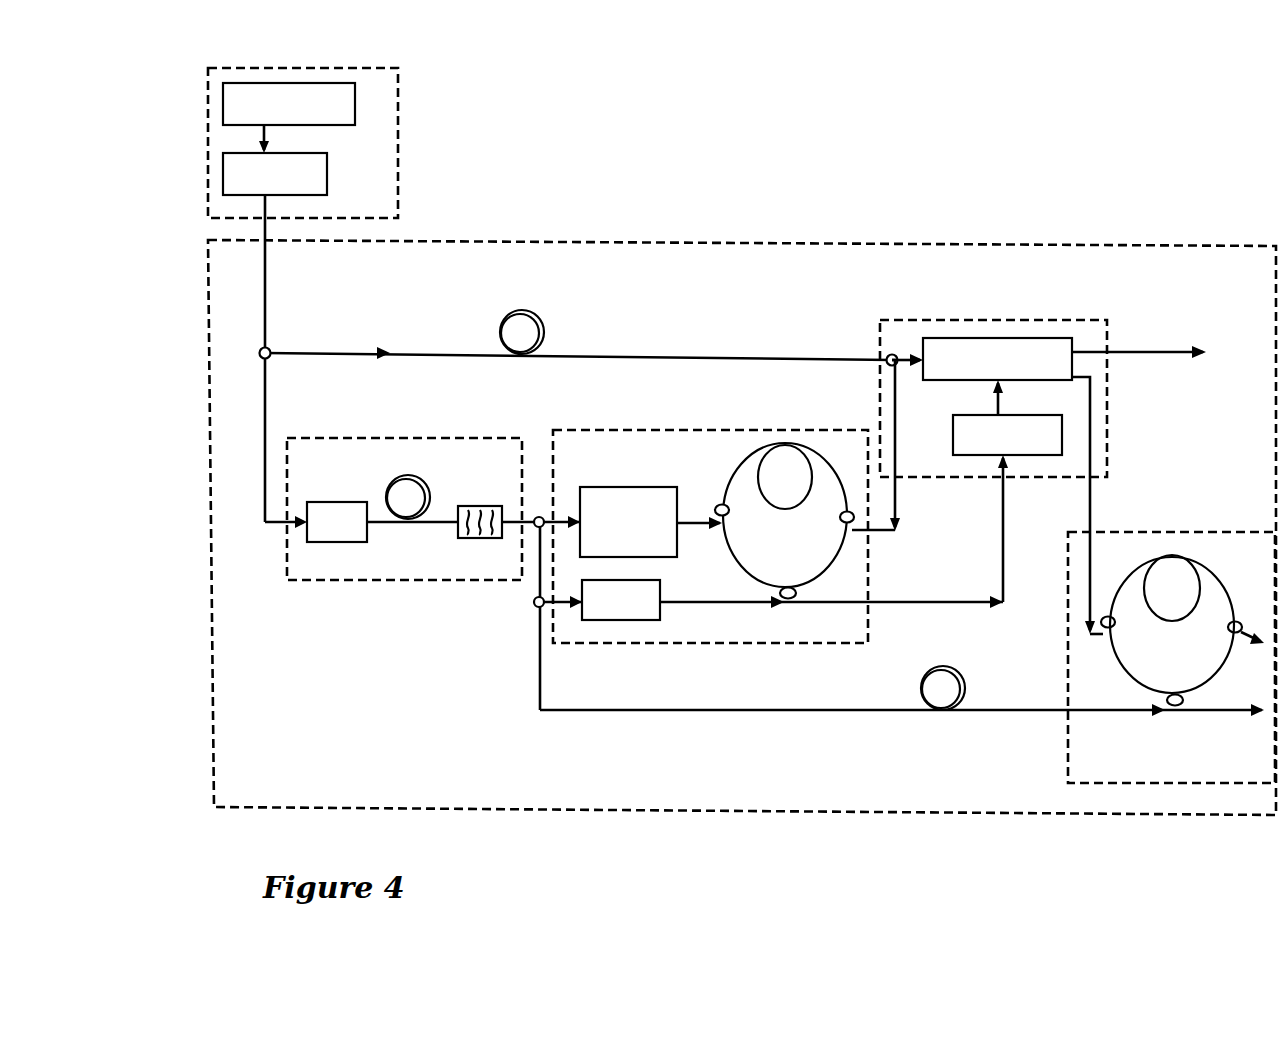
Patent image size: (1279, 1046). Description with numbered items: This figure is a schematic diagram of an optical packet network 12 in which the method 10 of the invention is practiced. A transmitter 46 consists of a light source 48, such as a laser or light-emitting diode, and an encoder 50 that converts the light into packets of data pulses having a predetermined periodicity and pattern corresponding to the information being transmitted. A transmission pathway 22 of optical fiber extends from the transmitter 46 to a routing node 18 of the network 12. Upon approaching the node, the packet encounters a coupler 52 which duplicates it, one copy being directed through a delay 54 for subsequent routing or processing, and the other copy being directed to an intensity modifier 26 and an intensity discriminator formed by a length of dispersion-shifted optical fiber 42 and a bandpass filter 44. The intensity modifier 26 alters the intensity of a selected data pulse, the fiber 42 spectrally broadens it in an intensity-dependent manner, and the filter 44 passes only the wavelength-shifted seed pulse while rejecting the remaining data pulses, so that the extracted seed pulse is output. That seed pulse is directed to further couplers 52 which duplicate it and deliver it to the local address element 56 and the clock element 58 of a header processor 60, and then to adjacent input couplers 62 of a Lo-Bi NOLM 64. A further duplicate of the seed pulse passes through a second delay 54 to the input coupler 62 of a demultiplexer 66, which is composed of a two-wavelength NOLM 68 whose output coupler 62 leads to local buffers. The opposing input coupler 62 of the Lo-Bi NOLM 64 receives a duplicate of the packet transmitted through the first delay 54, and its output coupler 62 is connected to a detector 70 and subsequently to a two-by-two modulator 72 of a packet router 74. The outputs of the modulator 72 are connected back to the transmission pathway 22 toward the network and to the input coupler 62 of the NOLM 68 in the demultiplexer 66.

The method 10 is at (355, 585).
The optical packet network 12 is at (566, 184).
The routing node 18 is at (787, 246).
The transmission pathway 22 is at (264, 236).
The intensity modifier 26 is at (329, 502).
The dispersion-shifted optical fiber 42 is at (420, 490).
The bandpass filter 44 is at (483, 506).
The transmitter 46 is at (383, 68).
The light source 48 is at (353, 100).
The encoder 50 is at (328, 178).
The coupler 52 is at (270, 350).
The delay 54 is at (544, 327).
The local address element 56 is at (654, 487).
The clock element 58 is at (662, 590).
The header processor 60 is at (712, 430).
The input coupler 62 is at (720, 504).
The Lo-Bi NOLM 64 is at (795, 448).
The demultiplexer 66 is at (1206, 532).
The NOLM 68 is at (1198, 580).
The detector 70 is at (1062, 440).
The modulator 72 is at (1030, 338).
The packet router 74 is at (1107, 384).